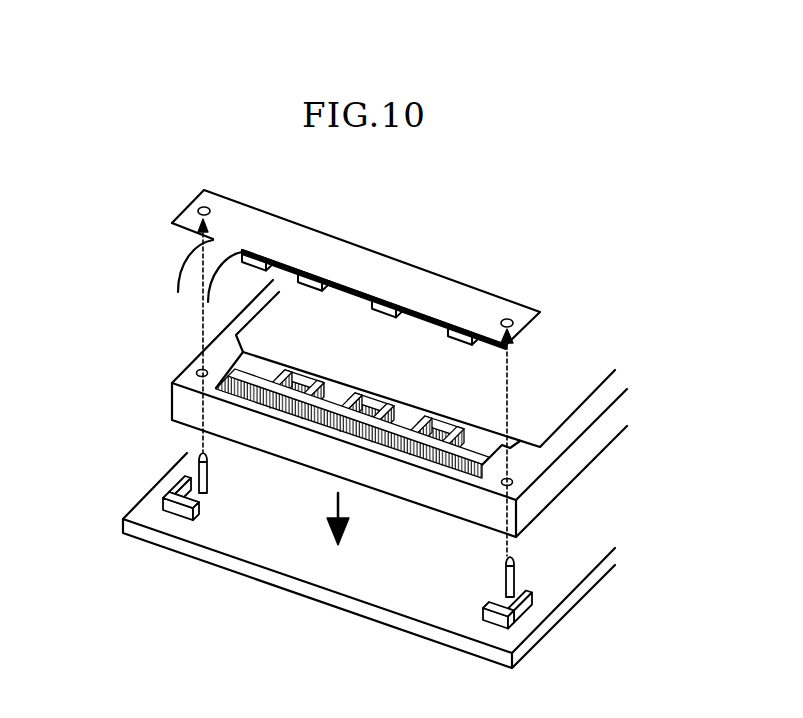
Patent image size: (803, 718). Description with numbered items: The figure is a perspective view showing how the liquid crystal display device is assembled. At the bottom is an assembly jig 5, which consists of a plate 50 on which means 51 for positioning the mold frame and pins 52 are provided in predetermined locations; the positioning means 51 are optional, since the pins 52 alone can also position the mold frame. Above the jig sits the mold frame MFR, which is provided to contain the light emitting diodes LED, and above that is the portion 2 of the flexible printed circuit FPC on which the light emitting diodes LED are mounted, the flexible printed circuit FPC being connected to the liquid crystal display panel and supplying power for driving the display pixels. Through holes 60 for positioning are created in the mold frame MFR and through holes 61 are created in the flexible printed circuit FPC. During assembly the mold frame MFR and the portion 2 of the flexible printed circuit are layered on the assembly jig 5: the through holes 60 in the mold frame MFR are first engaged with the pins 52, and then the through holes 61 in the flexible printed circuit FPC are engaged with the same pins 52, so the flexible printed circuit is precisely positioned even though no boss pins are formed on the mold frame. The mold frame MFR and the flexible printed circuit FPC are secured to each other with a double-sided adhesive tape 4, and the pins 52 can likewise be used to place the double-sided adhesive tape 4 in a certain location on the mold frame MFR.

The portion of the flexible printed circuit 2 is at (364, 251).
The double-sided adhesive tape 4 is at (437, 435).
The assembly jig 5 is at (122, 488).
The plate 50 is at (403, 568).
The means for positioning the mold frame 51 is at (178, 507).
The pins 52 is at (518, 578).
The through holes in the mold frame 60 is at (192, 368).
The through holes in the flexible printed circuit 61 is at (508, 318).
The flexible printed circuit FPC is at (213, 258).
The light emitting diodes LED is at (463, 340).
The mold frame MFR is at (555, 470).